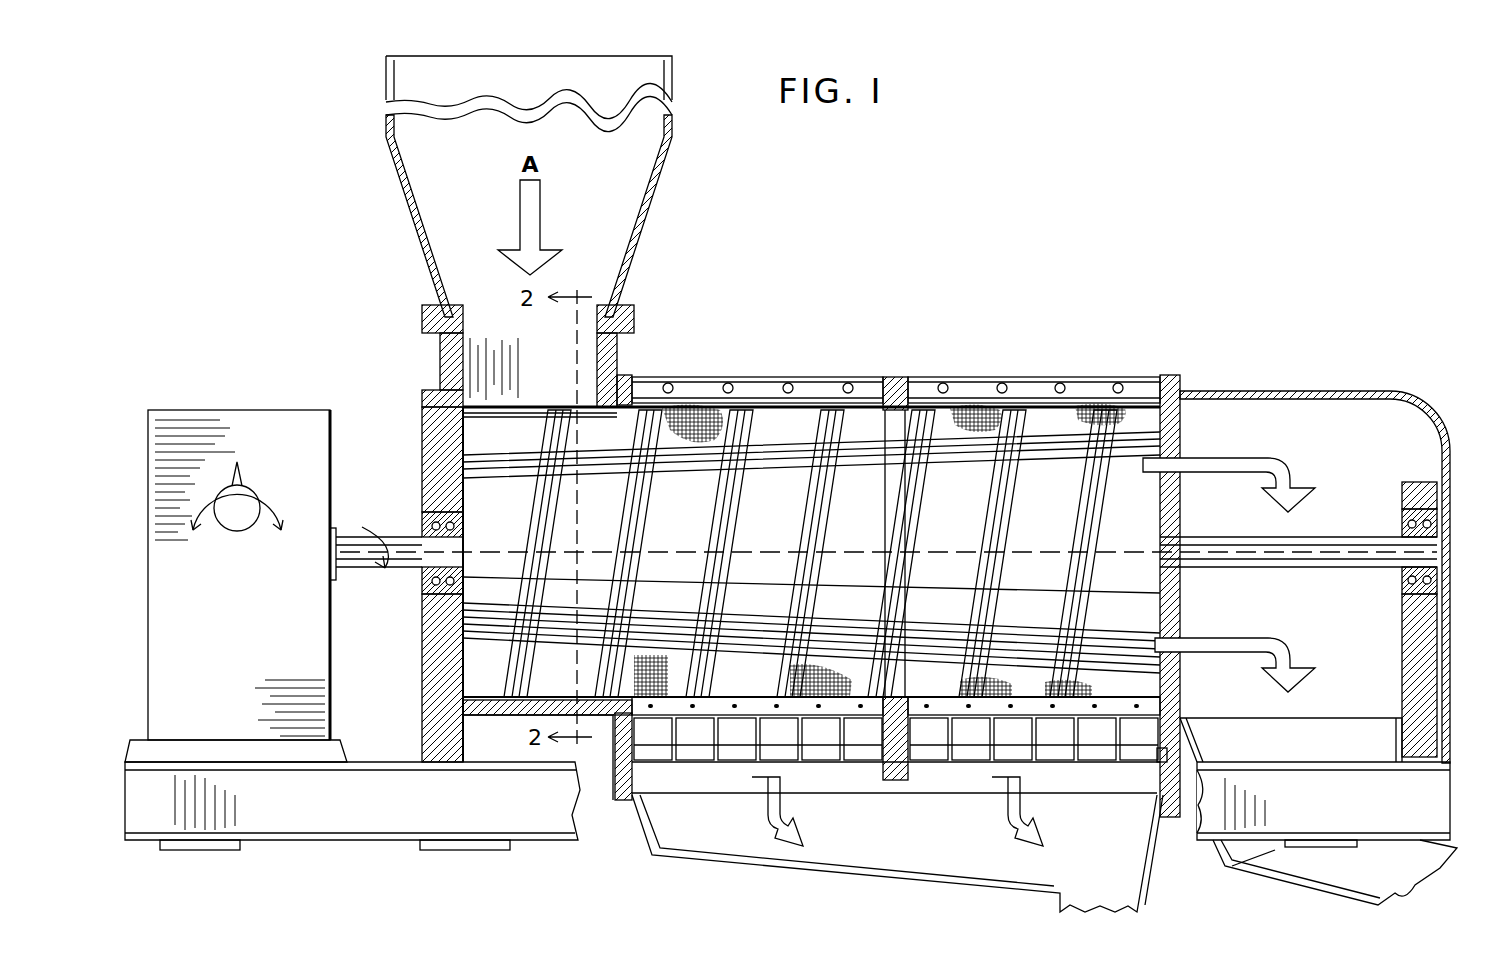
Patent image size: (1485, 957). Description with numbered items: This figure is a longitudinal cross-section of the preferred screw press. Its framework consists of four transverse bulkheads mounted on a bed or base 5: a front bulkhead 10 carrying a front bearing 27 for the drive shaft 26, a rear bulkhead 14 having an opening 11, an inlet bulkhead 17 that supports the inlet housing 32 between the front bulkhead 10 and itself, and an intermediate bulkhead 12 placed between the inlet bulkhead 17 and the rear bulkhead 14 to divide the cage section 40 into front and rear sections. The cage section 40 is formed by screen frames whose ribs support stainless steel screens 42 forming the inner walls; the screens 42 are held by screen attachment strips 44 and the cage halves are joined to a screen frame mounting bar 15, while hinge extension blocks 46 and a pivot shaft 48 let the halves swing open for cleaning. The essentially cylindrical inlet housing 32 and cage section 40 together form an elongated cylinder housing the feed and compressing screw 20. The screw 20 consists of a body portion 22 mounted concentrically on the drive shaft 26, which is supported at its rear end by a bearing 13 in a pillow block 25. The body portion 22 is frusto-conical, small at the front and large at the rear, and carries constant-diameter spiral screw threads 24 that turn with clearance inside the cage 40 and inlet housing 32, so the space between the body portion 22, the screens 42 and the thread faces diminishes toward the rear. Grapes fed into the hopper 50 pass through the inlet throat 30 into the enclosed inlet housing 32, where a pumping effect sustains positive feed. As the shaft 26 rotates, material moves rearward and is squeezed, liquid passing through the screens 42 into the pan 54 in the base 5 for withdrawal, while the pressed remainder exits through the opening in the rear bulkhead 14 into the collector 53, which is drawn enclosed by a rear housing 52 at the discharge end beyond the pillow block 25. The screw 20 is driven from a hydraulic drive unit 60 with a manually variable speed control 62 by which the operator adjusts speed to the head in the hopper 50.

The base 5 is at (326, 820).
The front bulkhead 10 is at (422, 430).
The opening 11 is at (1172, 452).
The intermediate bulkhead 12 is at (893, 376).
The bearing 13 is at (1400, 572).
The rear bulkhead 14 is at (1165, 375).
The screen frame mounting bar 15 is at (758, 388).
The inlet bulkhead 17 is at (628, 376).
The feed and compressing screw 20 is at (530, 395).
The body portion 22 is at (883, 543).
The spiral screw threads 24 is at (624, 556).
The pillow block 25 is at (1410, 660).
The drive shaft 26 is at (421, 525).
The front bearing 27 is at (421, 582).
The inlet throat 30 is at (468, 345).
The inlet housing 32 is at (520, 706).
The cage section 40 is at (786, 360).
The screens 42 is at (911, 426).
The screen attachment strips 44 is at (709, 402).
The hinge extension blocks 46 is at (832, 757).
The pivot shaft 48 is at (1163, 757).
The hopper 50 is at (415, 190).
The discharge housing 52 is at (1302, 392).
The collector 53 is at (1226, 724).
The pan 54 is at (797, 877).
The hydraulic drive unit 60 is at (290, 410).
The speed control 62 is at (247, 528).